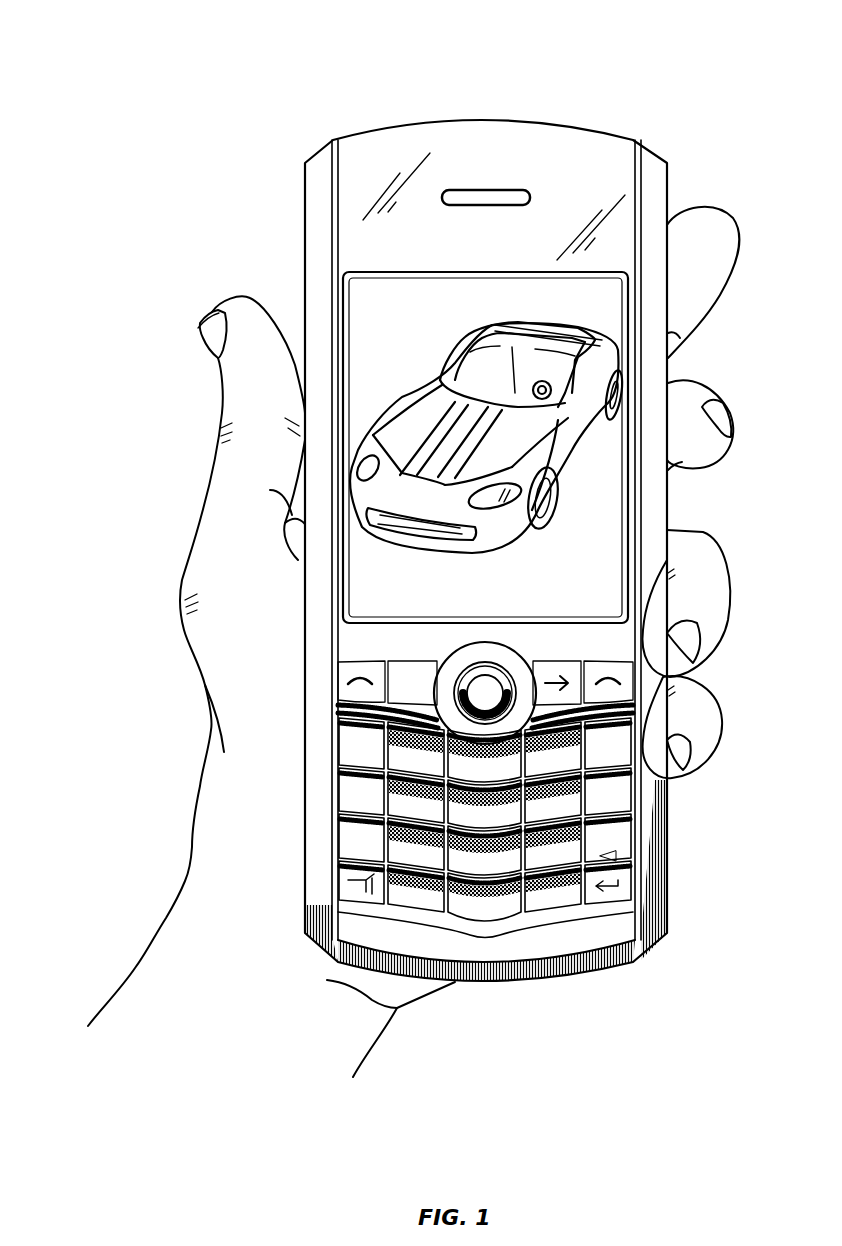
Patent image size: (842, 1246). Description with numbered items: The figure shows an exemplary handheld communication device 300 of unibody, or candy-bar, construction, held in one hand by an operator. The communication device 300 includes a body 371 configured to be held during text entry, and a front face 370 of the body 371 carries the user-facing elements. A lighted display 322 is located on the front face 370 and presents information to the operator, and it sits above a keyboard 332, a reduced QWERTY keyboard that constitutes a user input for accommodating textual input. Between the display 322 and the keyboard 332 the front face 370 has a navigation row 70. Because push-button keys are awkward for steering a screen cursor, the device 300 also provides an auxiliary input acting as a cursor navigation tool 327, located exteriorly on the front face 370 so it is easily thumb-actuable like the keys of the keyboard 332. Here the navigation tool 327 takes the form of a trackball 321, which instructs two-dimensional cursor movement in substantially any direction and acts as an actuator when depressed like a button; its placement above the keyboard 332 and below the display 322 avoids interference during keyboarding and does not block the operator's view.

The communication device 300 is at (623, 58).
The front face 370 is at (656, 195).
The body 371 is at (297, 166).
The lighted display 322 is at (368, 308).
The navigation row 70 is at (304, 650).
The trackball 321 is at (482, 694).
The cursor navigation tool 327 is at (520, 714).
The keyboard 332 is at (499, 952).